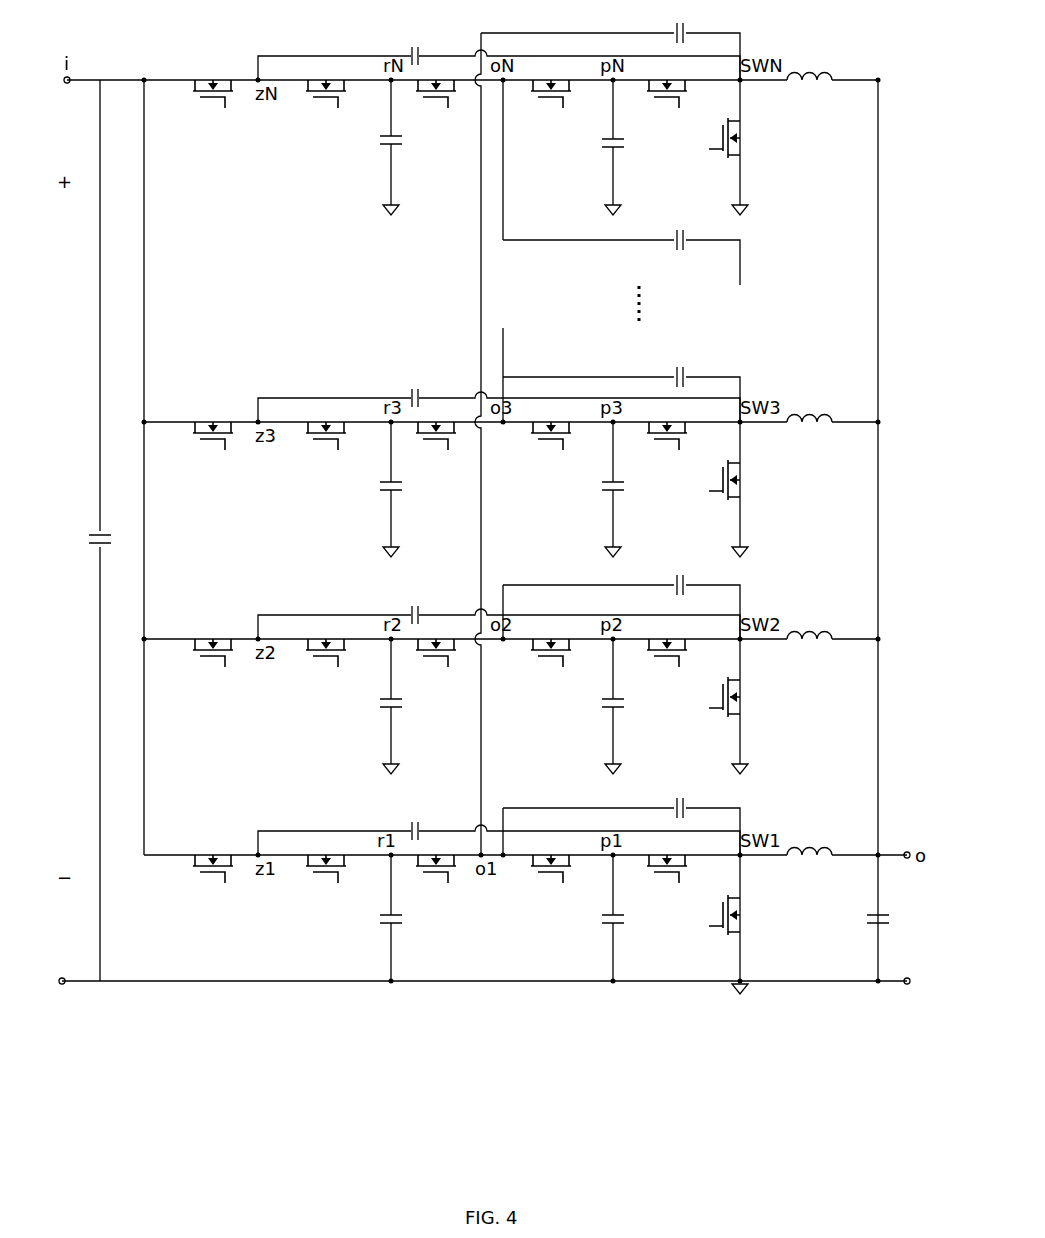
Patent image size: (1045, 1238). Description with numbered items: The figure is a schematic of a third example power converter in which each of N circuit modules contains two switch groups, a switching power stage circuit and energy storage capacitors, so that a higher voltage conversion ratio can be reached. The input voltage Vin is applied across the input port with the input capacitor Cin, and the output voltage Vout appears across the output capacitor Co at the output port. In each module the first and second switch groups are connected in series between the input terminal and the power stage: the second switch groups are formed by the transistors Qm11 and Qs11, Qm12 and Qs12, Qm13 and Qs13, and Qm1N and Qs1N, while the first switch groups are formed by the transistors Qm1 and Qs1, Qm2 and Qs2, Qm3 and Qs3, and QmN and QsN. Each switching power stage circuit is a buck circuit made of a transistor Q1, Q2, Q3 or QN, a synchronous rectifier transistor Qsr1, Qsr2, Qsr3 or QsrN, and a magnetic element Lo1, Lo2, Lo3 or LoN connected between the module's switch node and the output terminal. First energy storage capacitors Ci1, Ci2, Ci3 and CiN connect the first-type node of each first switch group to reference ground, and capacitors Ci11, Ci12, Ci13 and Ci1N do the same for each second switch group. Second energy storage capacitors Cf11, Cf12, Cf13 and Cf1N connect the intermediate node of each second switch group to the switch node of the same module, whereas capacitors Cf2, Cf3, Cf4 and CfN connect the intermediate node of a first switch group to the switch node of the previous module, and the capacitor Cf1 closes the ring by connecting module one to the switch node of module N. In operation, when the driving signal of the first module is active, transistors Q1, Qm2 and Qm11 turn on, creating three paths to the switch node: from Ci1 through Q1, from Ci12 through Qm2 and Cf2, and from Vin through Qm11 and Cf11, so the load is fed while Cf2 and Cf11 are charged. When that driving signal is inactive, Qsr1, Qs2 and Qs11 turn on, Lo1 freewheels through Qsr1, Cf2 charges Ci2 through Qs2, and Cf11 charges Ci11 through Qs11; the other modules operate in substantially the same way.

The input voltage Vin is at (65, 535).
The input capacitor Cin is at (86, 559).
The output capacitor Co is at (863, 918).
The output voltage Vout is at (909, 918).
The energy storage capacitor Cf1 is at (610, 40).
The energy storage capacitor Cf2 is at (621, 815).
The energy storage capacitor Cf3 is at (621, 600).
The energy storage capacitor Cf4 is at (621, 383).
The energy storage capacitor CfN is at (621, 246).
The energy storage capacitor Cf1N is at (499, 53).
The energy storage capacitor Cf13 is at (499, 395).
The energy storage capacitor Cf12 is at (499, 612).
The energy storage capacitor Cf11 is at (499, 828).
The energy storage capacitor Ci1N is at (371, 147).
The energy storage capacitor Ci13 is at (371, 489).
The energy storage capacitor Ci12 is at (371, 706).
The energy storage capacitor Ci11 is at (371, 918).
The energy storage capacitor CiN is at (596, 147).
The energy storage capacitor Ci3 is at (597, 489).
The energy storage capacitor Ci2 is at (597, 706).
The energy storage capacitor Ci1 is at (597, 918).
The magnetic element LoN is at (813, 63).
The magnetic element Lo3 is at (812, 405).
The magnetic element Lo2 is at (812, 622).
The magnetic element Lo1 is at (809, 838).
The transistor Qm1N is at (213, 93).
The transistor Qs1N is at (334, 93).
The transistor QmN is at (444, 95).
The transistor QsN is at (548, 94).
The transistor QN is at (669, 94).
The transistor QsrN is at (726, 147).
The transistor Qm13 is at (221, 435).
The transistor Qs13 is at (328, 435).
The transistor Qm3 is at (442, 436).
The transistor Qs3 is at (540, 436).
The transistor Q3 is at (672, 436).
The transistor Qsr3 is at (727, 489).
The transistor Qm12 is at (221, 652).
The transistor Qs12 is at (328, 652).
The transistor Qm2 is at (442, 653).
The transistor Qs2 is at (540, 653).
The transistor Q2 is at (672, 653).
The transistor Qsr2 is at (727, 706).
The transistor Qm11 is at (221, 868).
The transistor Qs11 is at (328, 868).
The transistor Qm1 is at (442, 869).
The transistor Qs1 is at (540, 869).
The transistor Q1 is at (672, 869).
The transistor Qsr1 is at (727, 924).